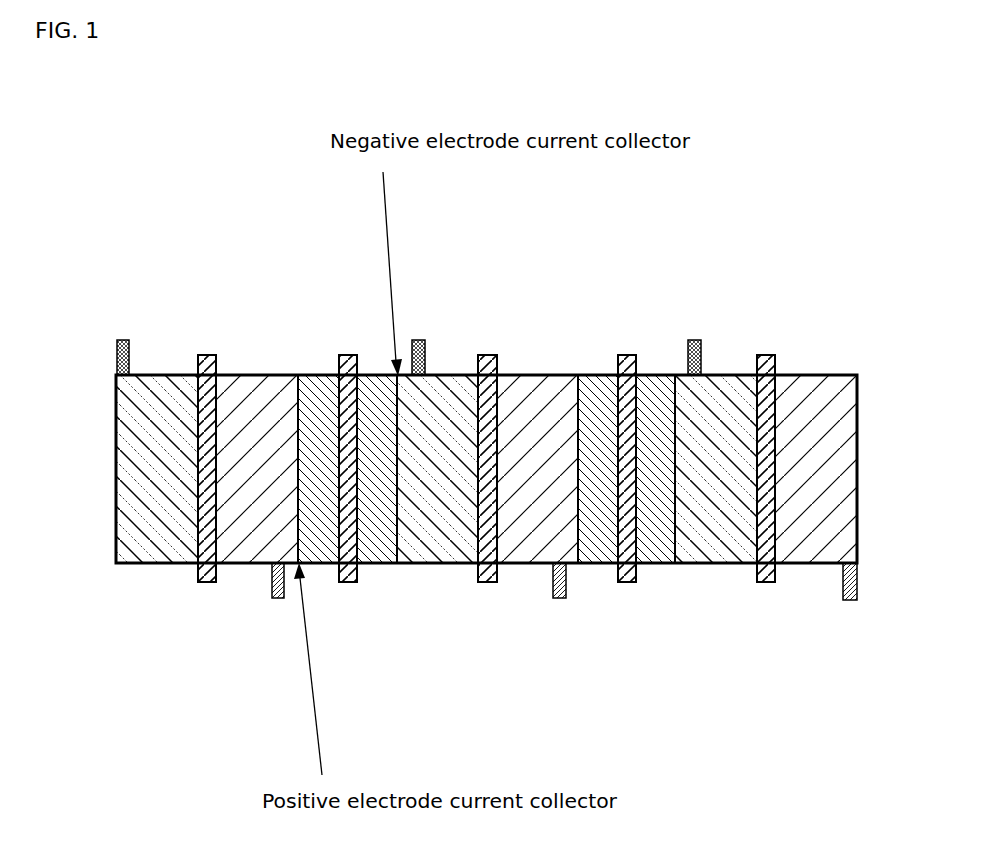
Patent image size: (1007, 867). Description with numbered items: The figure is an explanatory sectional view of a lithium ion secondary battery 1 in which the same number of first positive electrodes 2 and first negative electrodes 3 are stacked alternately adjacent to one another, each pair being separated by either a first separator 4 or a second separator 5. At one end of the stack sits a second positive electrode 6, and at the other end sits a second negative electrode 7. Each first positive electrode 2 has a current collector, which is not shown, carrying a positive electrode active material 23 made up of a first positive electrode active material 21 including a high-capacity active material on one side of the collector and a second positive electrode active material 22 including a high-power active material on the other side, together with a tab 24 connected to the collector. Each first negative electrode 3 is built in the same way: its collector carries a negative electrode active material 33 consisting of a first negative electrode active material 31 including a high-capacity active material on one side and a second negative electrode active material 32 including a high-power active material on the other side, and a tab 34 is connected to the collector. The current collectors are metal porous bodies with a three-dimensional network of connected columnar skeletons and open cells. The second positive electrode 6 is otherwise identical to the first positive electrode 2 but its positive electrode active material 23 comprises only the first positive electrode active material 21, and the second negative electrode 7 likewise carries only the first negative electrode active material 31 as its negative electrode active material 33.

The lithium ion secondary battery 1 is at (788, 181).
The first positive electrode 2 is at (538, 438).
The first negative electrode 3 is at (557, 550).
The first separator 4 is at (206, 352).
The second separator 5 is at (346, 352).
The second positive electrode 6 is at (820, 372).
The second negative electrode 7 is at (417, 536).
The first positive electrode active material 21 is at (266, 372).
The second positive electrode active material 22 is at (458, 444).
The positive electrode active material 23 is at (417, 427).
The tab 24 is at (282, 602).
The first negative electrode active material 31 is at (137, 578).
The second negative electrode active material 32 is at (448, 612).
The negative electrode active material 33 is at (557, 511).
The tab 34 is at (124, 335).